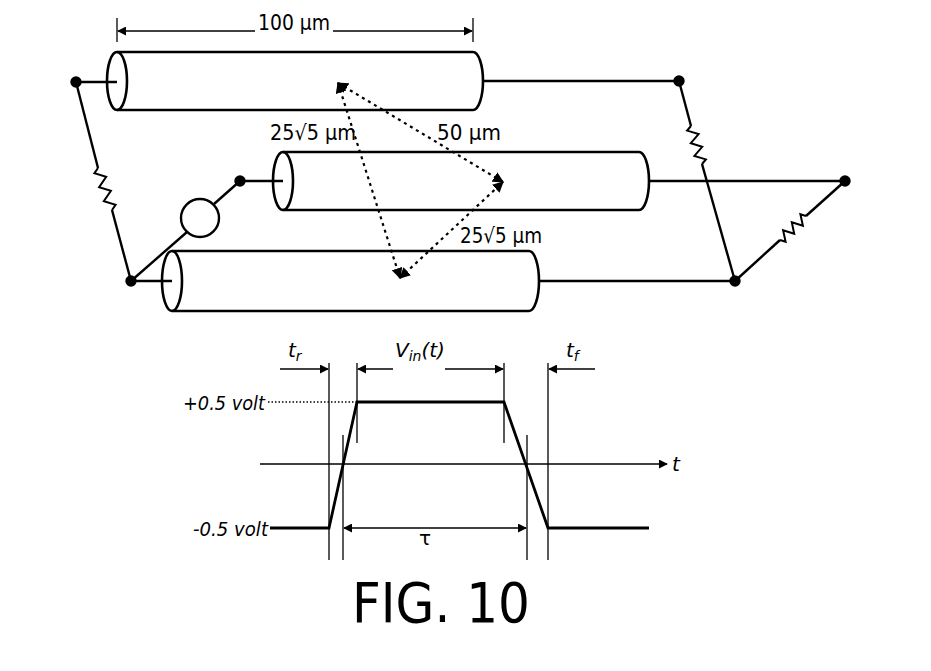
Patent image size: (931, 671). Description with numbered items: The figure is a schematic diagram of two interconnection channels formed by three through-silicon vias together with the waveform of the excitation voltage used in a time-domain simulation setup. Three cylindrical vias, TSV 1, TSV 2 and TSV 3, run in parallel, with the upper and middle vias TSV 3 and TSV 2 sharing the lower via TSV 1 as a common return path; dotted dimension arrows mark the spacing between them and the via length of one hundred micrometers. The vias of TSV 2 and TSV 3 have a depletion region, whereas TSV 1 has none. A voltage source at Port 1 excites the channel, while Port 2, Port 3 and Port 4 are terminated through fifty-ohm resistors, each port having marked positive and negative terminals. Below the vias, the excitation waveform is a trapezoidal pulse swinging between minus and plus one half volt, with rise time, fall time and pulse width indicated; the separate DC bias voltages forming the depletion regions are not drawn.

The TSV 1 TSV1 is at (350, 281).
The TSV 2 TSV2 is at (461, 181).
The TSV 3 TSV3 is at (295, 81).
The Port 1 Port1 is at (207, 219).
The Port 2 Port2 is at (698, 238).
The Port 3 Port3 is at (106, 180).
The Port 4 Port4 is at (615, 179).